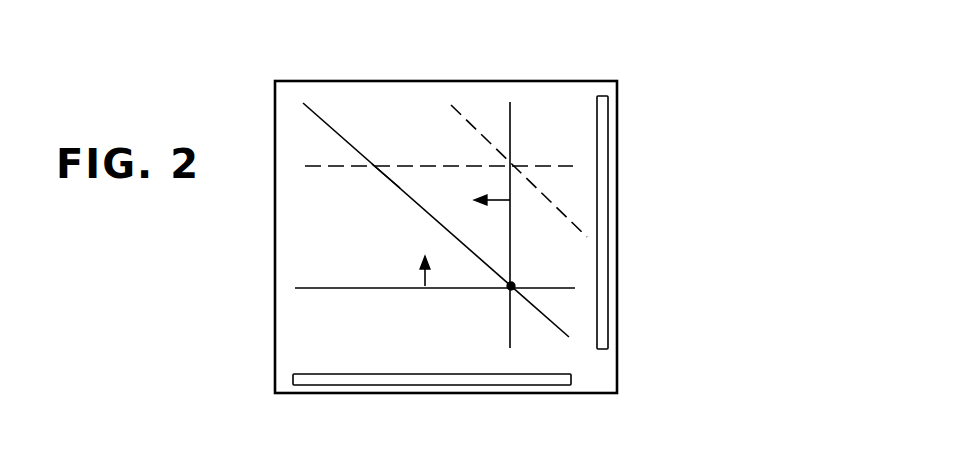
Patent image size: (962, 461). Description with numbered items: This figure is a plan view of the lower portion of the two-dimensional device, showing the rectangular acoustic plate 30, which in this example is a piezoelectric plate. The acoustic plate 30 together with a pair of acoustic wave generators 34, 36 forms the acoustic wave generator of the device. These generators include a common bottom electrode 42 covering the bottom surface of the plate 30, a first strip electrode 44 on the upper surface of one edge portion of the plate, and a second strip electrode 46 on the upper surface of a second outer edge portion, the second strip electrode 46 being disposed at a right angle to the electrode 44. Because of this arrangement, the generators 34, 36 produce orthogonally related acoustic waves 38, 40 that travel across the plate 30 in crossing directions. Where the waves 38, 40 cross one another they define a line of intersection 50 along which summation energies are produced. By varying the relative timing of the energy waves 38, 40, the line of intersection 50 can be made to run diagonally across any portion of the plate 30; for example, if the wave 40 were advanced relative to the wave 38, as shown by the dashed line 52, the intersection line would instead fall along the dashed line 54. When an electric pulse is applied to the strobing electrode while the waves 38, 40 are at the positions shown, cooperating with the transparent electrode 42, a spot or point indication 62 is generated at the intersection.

The acoustic plate 30 is at (327, 99).
The acoustic wave generator 34 is at (618, 55).
The acoustic wave generator 36 is at (234, 384).
The acoustic wave 38 is at (511, 121).
The acoustic wave 40 is at (313, 291).
The common bottom electrode 42 is at (494, 4).
The first strip electrode 44 is at (601, 206).
The second strip electrode 46 is at (420, 379).
The line of intersection 50 is at (398, 188).
The dashed line 52 is at (446, 164).
The dashed line 54 is at (461, 115).
The spot or point indication 62 is at (514, 283).